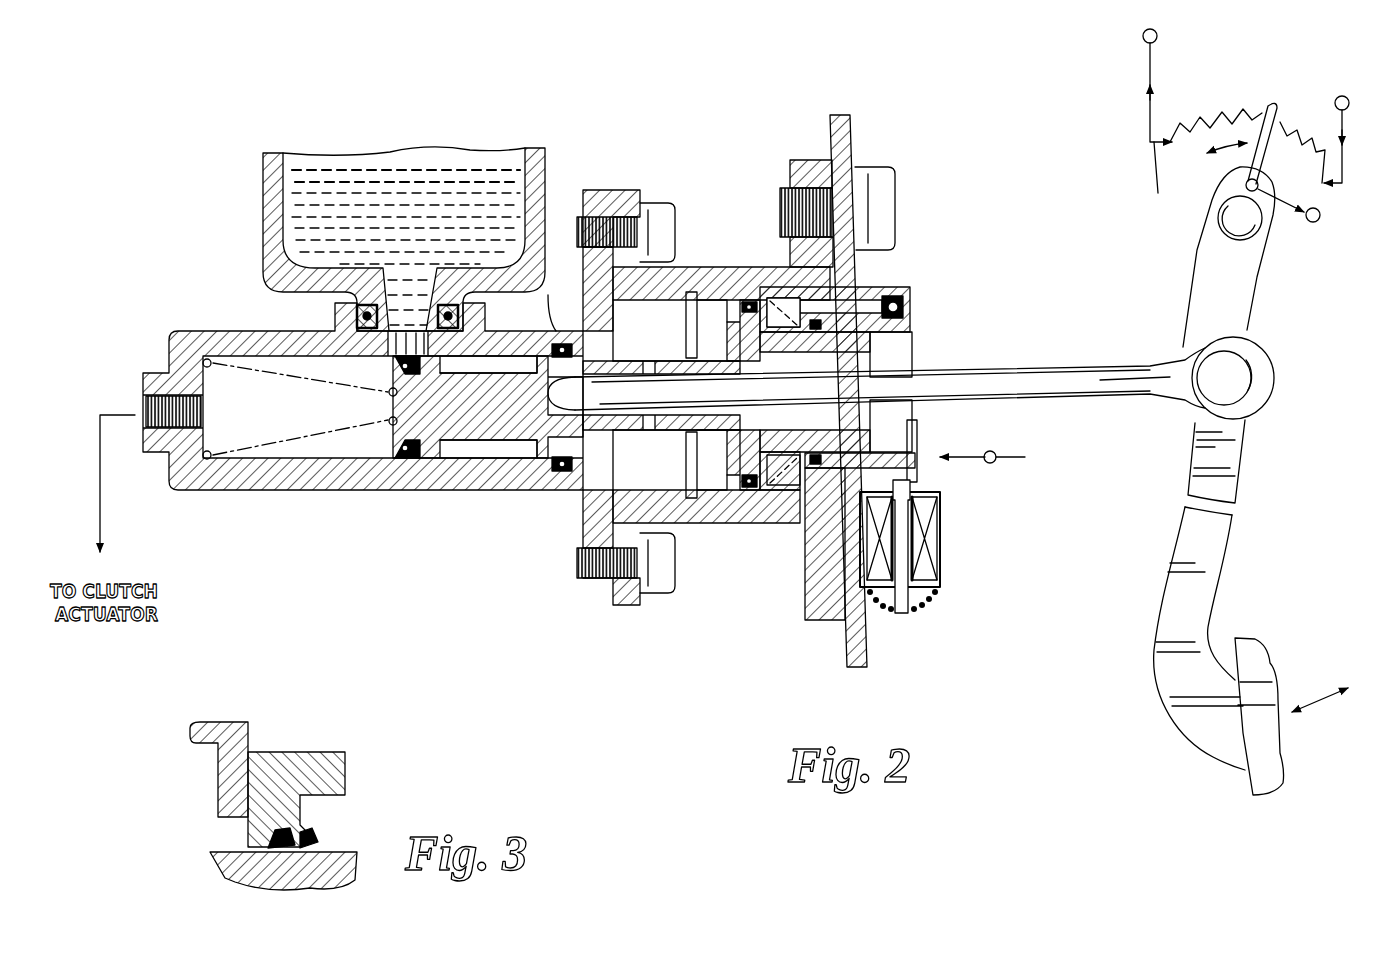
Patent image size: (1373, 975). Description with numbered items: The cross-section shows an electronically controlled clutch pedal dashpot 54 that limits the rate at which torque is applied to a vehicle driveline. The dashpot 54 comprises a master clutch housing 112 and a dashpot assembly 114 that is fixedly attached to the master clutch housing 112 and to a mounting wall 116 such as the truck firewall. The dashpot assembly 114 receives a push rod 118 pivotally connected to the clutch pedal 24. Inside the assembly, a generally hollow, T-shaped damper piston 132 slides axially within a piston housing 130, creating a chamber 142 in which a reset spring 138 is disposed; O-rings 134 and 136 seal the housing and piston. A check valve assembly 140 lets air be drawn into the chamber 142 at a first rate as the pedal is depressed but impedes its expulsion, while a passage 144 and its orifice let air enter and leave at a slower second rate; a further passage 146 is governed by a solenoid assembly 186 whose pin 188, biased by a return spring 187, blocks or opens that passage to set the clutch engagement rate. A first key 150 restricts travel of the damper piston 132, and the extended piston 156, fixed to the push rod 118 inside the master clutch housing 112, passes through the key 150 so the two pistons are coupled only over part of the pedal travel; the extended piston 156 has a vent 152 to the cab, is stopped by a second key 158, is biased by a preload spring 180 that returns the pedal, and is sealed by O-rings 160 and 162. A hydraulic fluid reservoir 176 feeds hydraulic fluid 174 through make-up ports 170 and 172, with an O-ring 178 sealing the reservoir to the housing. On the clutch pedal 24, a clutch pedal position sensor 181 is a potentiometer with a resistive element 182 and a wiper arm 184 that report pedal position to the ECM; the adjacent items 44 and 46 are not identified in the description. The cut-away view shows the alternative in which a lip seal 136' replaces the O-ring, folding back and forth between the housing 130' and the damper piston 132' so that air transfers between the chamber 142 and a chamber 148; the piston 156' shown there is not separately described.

In FIG. 2, the clutch pedal 24 is at (1215, 533).
In FIG. 2, the pedal position sensor 44 is at (1138, 53).
In FIG. 2, the pedal force sensor 46 is at (1310, 238).
In FIG. 2, the clutch pedal dashpot 54 is at (488, 603).
In FIG. 2, the master clutch housing 112 is at (392, 491).
In FIG. 2, the dashpot assembly 114 is at (730, 608).
In FIG. 2, the mounting wall 116 is at (852, 132).
In FIG. 2, the push rod 118 is at (905, 375).
In FIG. 2, the piston housing 130 is at (714, 393).
In FIG. 2, the damper piston 132 is at (876, 367).
In FIG. 2, the O-ring 134 is at (895, 275).
In FIG. 2, the O-ring 136 is at (727, 446).
In FIG. 2, the reset spring 138 is at (742, 300).
In FIG. 2, the check valve assembly 140 is at (908, 290).
In FIG. 2, the chamber 142 is at (765, 305).
In FIG. 2, the passage 144 is at (917, 470).
In FIG. 2, the passage 146 is at (938, 470).
In FIG. 2, the chamber 148 is at (700, 457).
In FIG. 2, the first piston stop member, or key 150 is at (688, 300).
In FIG. 2, the orifice, or vent 152 is at (646, 375).
In FIG. 2, the extended piston 156 is at (488, 452).
In FIG. 2, the second piston stop, or key 158 is at (565, 475).
In FIG. 2, the O-ring 160 is at (425, 460).
In FIG. 2, the O-ring 162 is at (595, 300).
In FIG. 2, the fluid make-up port 170 is at (372, 302).
In FIG. 2, the fluid make-up port 172 is at (438, 302).
In FIG. 2, the hydraulic fluid 174 is at (478, 165).
In FIG. 2, the hydraulic fluid reservoir 176 is at (265, 160).
In FIG. 2, the O-ring 178 is at (555, 300).
In FIG. 2, the preload spring 180 is at (263, 366).
In FIG. 2, the clutch pedal position sensor 181 is at (1292, 100).
In FIG. 2, the resistive element 182 is at (1231, 128).
In FIG. 2, the wiper arm 184 is at (1250, 178).
In FIG. 2, the solenoid assembly 186 is at (950, 550).
In FIG. 2, the return spring 187 is at (925, 608).
In FIG. 2, the pin 188 is at (900, 613).
In FIG. 3, the housing 130' is at (234, 878).
In FIG. 3, the damper piston 132' is at (296, 768).
In FIG. 3, the lip seal 136' is at (215, 829).
In FIG. 3, the piston (alternate) 156' is at (180, 769).